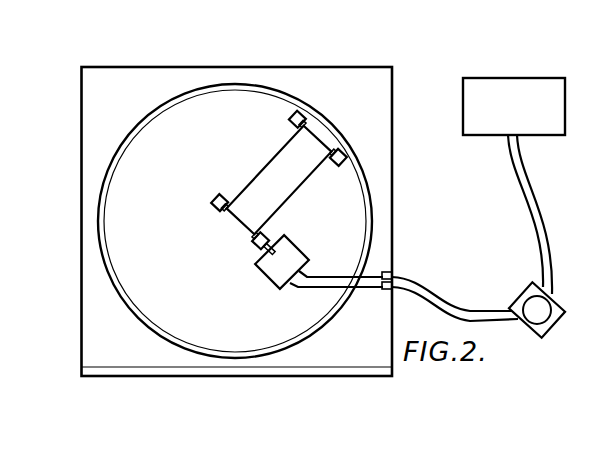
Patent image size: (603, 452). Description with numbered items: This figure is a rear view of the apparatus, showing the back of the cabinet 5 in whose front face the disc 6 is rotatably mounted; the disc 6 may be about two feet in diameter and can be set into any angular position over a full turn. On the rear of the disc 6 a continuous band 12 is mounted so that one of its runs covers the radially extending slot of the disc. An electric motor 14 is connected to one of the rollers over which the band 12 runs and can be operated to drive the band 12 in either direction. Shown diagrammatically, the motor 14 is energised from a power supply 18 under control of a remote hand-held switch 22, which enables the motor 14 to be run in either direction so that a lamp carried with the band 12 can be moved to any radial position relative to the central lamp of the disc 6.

The cabinet 5 is at (87, 172).
The disc 6 is at (175, 122).
The continuous band 12 is at (291, 178).
The electric motor 14 is at (292, 253).
The power supply 18 is at (545, 135).
The remote hand-held switch 22 is at (543, 335).